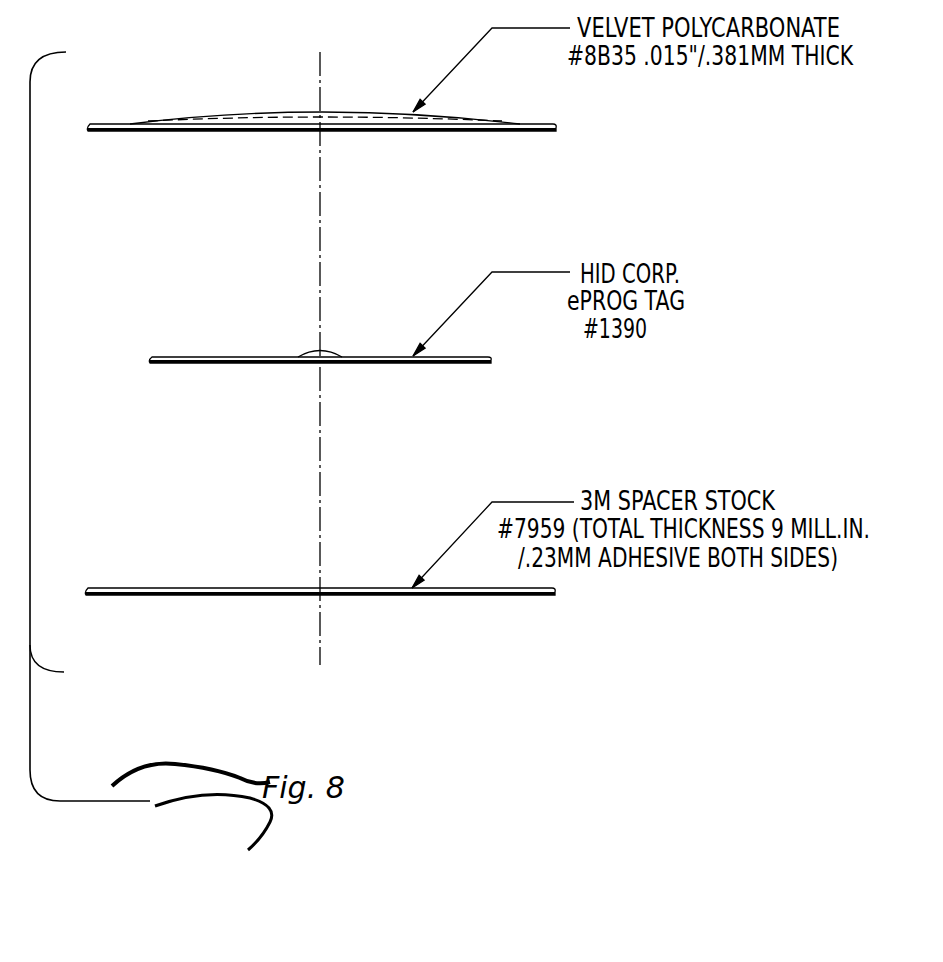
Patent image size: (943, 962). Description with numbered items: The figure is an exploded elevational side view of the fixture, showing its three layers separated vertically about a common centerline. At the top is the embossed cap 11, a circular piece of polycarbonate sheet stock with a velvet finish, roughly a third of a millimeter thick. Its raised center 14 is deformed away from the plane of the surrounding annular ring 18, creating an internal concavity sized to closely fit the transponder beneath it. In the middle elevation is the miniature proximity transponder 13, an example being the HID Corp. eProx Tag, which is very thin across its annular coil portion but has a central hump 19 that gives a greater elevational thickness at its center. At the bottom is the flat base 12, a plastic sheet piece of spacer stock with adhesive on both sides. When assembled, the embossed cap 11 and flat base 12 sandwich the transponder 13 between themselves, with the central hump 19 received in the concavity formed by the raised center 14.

The embossed cap 11 is at (228, 112).
The raised center 14 is at (194, 122).
The annular ring 18 is at (527, 126).
The miniature proximity transponder 13 is at (213, 357).
The central hump 19 is at (305, 352).
The flat base 12 is at (225, 588).